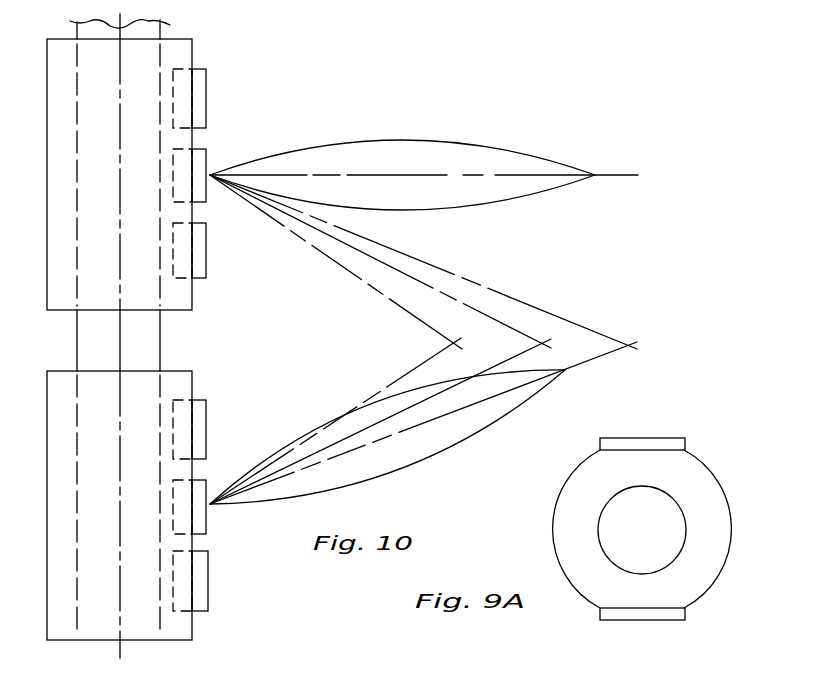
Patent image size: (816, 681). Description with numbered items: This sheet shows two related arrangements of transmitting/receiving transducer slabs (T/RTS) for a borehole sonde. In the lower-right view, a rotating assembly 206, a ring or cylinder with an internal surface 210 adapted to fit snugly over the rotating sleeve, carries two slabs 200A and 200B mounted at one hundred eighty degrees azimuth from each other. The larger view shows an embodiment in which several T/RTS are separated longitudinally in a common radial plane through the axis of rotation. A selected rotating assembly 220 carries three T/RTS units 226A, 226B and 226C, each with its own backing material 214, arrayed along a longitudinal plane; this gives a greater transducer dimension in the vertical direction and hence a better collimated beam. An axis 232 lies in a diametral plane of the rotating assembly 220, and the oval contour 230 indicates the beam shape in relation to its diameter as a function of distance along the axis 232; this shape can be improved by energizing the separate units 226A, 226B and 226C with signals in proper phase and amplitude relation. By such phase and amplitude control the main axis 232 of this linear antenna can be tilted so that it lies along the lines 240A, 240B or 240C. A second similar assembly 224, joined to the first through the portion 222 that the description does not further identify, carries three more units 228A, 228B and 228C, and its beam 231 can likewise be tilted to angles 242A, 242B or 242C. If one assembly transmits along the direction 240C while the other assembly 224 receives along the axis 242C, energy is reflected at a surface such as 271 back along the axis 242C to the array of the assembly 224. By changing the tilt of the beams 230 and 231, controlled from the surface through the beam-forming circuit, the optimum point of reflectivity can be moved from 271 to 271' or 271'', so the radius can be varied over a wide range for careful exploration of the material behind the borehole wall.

In FIG. 10, the rotating assembly 220 is at (193, 46).
In FIG. 10, the fiber connection between blocks 222 is at (161, 329).
In FIG. 10, the second similar assembly 224 is at (193, 378).
In FIG. 10, the backing material 214 is at (183, 98).
In FIG. 10, the T/RTS unit 226A is at (207, 80).
In FIG. 10, the T/RTS unit 226B is at (207, 157).
In FIG. 10, the T/RTS unit 226C is at (207, 253).
In FIG. 10, the T/RTS unit 228A is at (207, 414).
In FIG. 10, the T/RTS unit 228B is at (207, 516).
In FIG. 10, the T/RTS unit 228C is at (209, 568).
In FIG. 10, the oval beam contour 230 is at (458, 143).
In FIG. 10, the beam axis 232 is at (618, 172).
In FIG. 10, the tilted beam axis line 240A is at (372, 285).
In FIG. 10, the tilted beam axis line 240B is at (390, 266).
In FIG. 10, the tilted beam axis line 240C is at (475, 290).
In FIG. 10, the beam 231 is at (463, 448).
In FIG. 10, the tilted beam angle line 242A is at (403, 378).
In FIG. 10, the tilted beam angle line 242B is at (372, 423).
In FIG. 10, the tilted beam angle line 242C is at (357, 448).
In FIG. 10, the reflecting surface 271 is at (420, 347).
In FIG. 10, the reflecting point 271' is at (590, 314).
In FIG. 10, the reflecting point 271'' is at (659, 322).
In FIG. 9A, the rotating assembly 206 is at (565, 513).
In FIG. 9A, the internal surface 210 is at (600, 527).
In FIG. 9A, the T/RTS slab 200A is at (686, 444).
In FIG. 9A, the T/RTS slab 200B is at (629, 621).